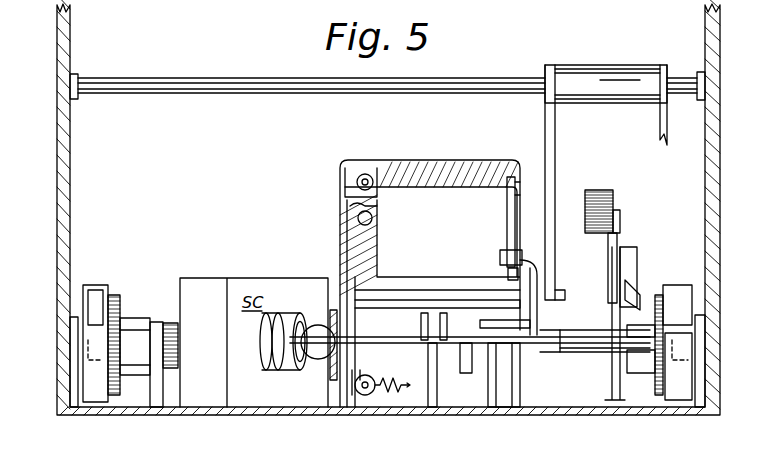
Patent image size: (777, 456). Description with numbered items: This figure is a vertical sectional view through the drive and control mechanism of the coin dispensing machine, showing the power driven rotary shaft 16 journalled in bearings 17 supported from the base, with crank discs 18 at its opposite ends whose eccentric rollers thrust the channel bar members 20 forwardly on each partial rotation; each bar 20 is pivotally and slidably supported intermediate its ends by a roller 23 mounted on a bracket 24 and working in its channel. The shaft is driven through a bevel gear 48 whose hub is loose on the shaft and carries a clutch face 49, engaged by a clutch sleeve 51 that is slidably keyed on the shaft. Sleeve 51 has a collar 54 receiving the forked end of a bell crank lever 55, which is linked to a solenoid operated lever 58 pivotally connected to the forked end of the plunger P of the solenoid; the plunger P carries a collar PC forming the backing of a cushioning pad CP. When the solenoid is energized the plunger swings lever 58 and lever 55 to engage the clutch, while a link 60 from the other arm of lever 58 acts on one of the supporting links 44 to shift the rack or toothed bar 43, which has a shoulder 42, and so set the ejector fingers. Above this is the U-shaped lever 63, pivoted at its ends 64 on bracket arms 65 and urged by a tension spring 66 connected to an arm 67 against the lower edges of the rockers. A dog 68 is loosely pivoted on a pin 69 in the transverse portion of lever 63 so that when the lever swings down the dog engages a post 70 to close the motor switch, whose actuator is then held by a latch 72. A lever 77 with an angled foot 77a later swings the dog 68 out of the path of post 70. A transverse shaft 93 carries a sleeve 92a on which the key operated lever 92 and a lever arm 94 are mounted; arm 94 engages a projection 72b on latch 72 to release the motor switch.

The transverse shaft 93 is at (495, 80).
The sleeve 92a is at (615, 70).
The lever arm 94 is at (548, 132).
The lever 92 is at (662, 120).
The U-shaped lever 63 is at (452, 170).
The ends 64 is at (370, 176).
The bracket arms 65 is at (350, 184).
The dog 68 is at (507, 214).
The pin 69 is at (506, 187).
The angled foot 77a is at (500, 256).
The post 70 is at (505, 272).
The clutch face 49 is at (380, 330).
The bell crank lever 55 is at (424, 312).
The collar 54 is at (444, 312).
The latch 72 is at (490, 320).
The rotary shaft 16 is at (585, 337).
The solenoid operated lever 58 is at (560, 345).
The lever 77 is at (553, 329).
The clutch sleeve 51 is at (480, 360).
The bevel gear 48 is at (330, 320).
The plunger P is at (318, 343).
The cushioning pad CP is at (270, 366).
The collar PC is at (305, 362).
The arm 67 is at (360, 395).
The tension spring 66 is at (380, 395).
The channel bar members 20 is at (98, 290).
The crank discs 18 is at (116, 300).
The bearings 17 is at (155, 330).
The roller 23 is at (70, 322).
The bracket 24 is at (70, 340).
The shoulder 42 is at (588, 210).
The rack or toothed bar 43 is at (616, 212).
The link 60 is at (636, 282).
The supporting links 44 is at (612, 304).
The projection 72b is at (560, 298).